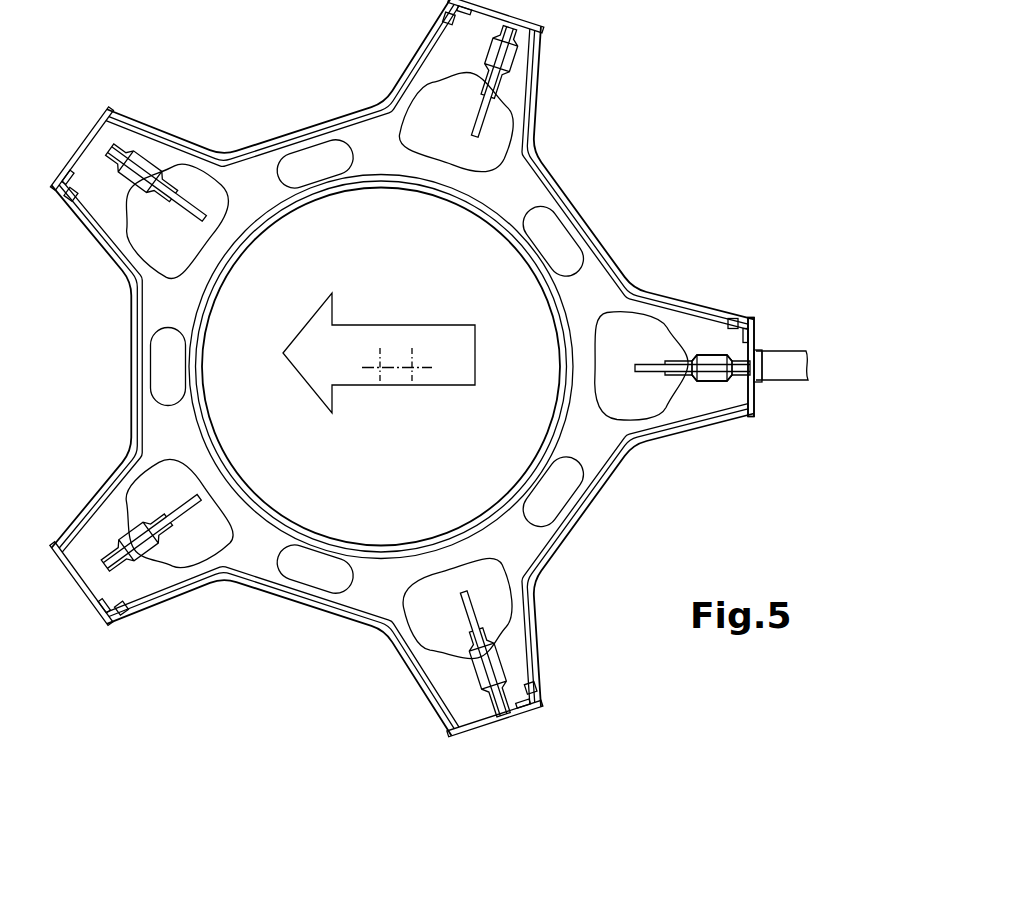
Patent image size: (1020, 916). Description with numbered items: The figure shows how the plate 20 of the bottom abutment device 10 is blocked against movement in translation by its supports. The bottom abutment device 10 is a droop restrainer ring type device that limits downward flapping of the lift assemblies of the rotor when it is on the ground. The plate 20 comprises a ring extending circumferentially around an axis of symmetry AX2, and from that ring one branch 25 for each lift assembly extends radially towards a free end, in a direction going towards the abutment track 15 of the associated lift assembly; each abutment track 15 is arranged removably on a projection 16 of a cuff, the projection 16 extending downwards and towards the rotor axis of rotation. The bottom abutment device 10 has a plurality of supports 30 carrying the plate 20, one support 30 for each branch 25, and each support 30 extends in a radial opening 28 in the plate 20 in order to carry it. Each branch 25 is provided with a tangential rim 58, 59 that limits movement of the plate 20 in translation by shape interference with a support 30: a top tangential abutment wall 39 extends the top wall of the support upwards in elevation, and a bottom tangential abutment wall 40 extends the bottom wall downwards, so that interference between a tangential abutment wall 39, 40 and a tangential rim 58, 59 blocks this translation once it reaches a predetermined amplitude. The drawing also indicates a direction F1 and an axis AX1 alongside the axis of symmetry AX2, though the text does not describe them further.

The bottom abutment device 10 is at (646, 152).
The abutment track 15 is at (767, 372).
The projection 16 is at (798, 351).
The plate 20 is at (345, 628).
The branch 25 is at (170, 113).
The radial opening 28 is at (394, 367).
The support 30 is at (170, 182).
The top tangential abutment wall 39 is at (716, 353).
The bottom tangential abutment wall 40 is at (712, 368).
The tangential rim 58 is at (760, 345).
The tangential rim 59 is at (751, 367).
The force direction F1 is at (379, 353).
The first axis AX1 is at (412, 367).
The axis of symmetry AX2 is at (380, 367).